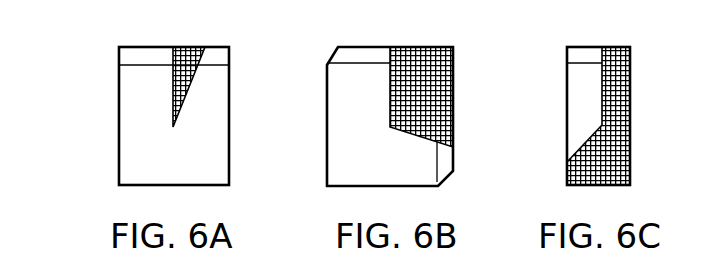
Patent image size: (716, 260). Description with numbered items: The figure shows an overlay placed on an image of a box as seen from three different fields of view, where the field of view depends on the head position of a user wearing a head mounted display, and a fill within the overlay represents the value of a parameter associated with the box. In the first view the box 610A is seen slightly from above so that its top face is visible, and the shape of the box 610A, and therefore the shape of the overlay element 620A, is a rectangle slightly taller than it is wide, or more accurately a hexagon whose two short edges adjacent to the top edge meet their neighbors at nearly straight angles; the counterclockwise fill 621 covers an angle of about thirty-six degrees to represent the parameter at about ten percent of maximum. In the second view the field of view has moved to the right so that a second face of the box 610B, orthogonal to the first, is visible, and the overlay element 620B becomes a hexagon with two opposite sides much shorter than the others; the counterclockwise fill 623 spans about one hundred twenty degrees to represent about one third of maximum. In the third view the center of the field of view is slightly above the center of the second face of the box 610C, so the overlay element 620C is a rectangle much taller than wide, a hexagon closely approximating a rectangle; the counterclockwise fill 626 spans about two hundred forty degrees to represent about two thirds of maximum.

In FIG. 6A, the box 610A is at (148, 105).
In FIG. 6A, the overlay element 620A is at (119, 167).
In FIG. 6A, the counterclockwise fill 621 is at (198, 77).
In FIG. 6B, the box 610B is at (374, 104).
In FIG. 6B, the overlay element 620B is at (327, 170).
In FIG. 6B, the counterclockwise fill 623 is at (455, 103).
In FIG. 6C, the box 610C is at (576, 104).
In FIG. 6C, the overlay element 620C is at (567, 172).
In FIG. 6C, the counterclockwise fill 626 is at (628, 102).